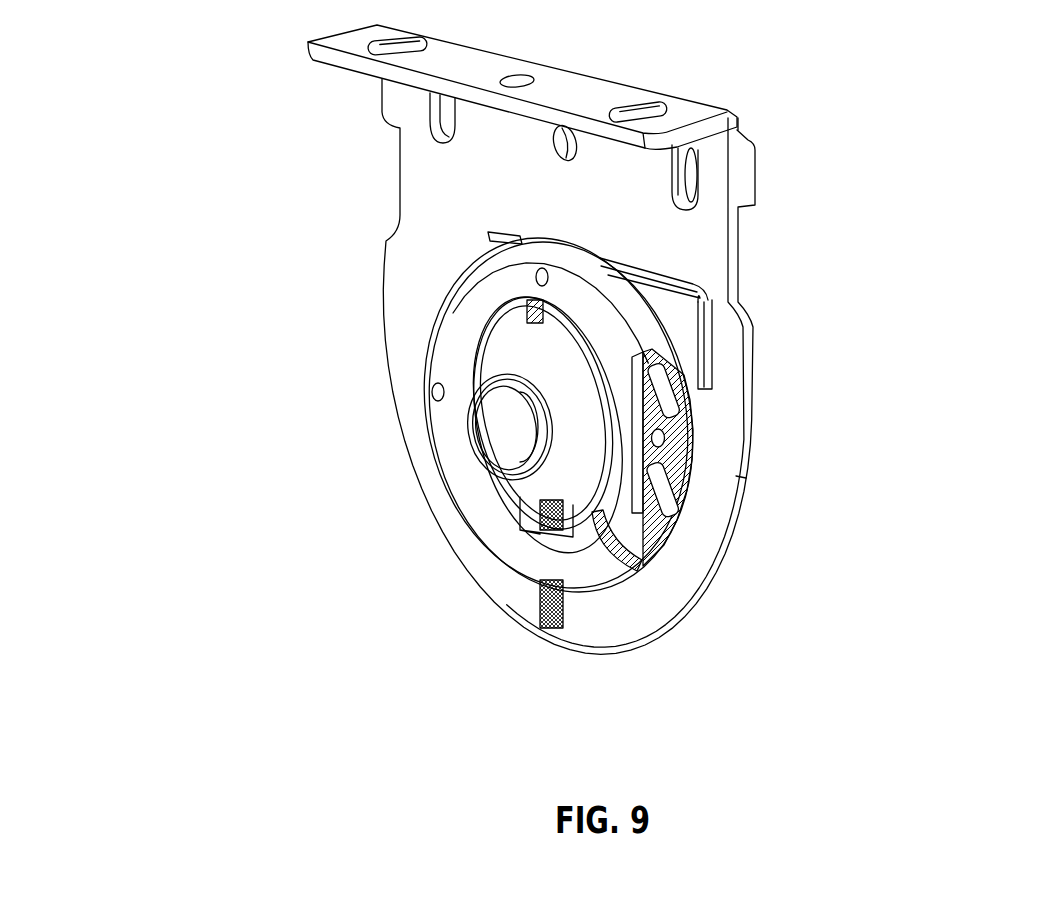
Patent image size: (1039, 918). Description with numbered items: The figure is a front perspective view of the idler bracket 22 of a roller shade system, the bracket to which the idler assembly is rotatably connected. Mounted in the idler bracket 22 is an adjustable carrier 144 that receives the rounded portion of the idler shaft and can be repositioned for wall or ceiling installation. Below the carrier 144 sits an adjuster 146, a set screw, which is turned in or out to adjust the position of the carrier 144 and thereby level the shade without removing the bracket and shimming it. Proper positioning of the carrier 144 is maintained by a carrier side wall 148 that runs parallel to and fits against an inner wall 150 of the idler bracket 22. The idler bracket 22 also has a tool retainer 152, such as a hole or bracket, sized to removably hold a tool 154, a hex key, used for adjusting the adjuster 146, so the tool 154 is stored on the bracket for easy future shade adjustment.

The idler bracket 22 is at (728, 345).
The adjustable carrier 144 is at (492, 440).
The adjuster 146 is at (547, 600).
The carrier side wall 148 is at (641, 434).
The inner wall 150 is at (650, 485).
The tool retainer 152 is at (603, 260).
The tool 154 is at (707, 297).